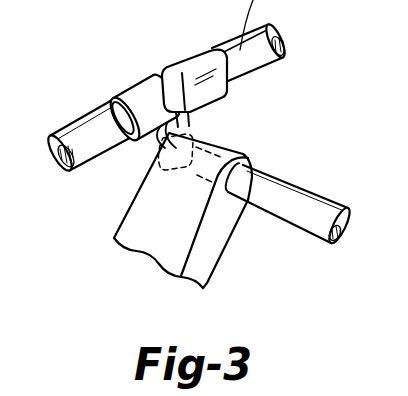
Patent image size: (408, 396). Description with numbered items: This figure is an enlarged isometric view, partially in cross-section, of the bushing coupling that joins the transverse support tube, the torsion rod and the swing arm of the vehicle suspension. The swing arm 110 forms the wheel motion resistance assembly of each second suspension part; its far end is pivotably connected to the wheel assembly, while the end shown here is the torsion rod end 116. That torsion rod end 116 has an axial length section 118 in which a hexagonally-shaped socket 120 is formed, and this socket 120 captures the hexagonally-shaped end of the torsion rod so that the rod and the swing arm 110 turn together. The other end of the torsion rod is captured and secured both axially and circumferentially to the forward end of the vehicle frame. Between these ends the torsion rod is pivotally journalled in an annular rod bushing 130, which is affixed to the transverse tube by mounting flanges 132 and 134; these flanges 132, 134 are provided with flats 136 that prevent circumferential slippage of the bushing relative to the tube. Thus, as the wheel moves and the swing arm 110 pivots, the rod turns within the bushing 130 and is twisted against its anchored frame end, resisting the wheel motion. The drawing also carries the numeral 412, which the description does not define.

The swing arm 110 is at (105, 203).
The torsion rod end 116 is at (206, 278).
The axial length section 118 is at (276, 161).
The hexagonally-shaped socket 120 is at (206, 143).
The annular rod bushing 130 is at (116, 73).
The mounting flange 132 is at (229, 87).
The mounting flange 134 is at (114, 99).
The flats 136 is at (162, 73).
The tube end portion 412 is at (302, 219).